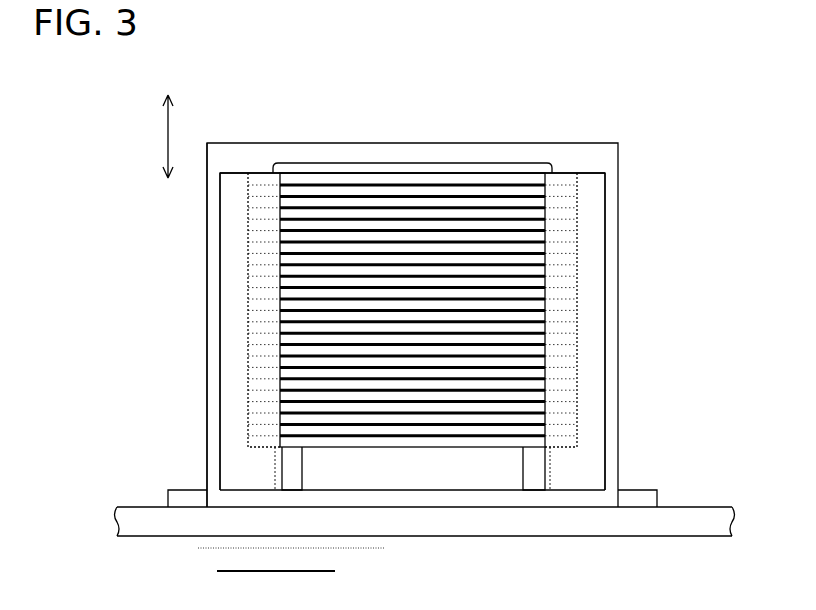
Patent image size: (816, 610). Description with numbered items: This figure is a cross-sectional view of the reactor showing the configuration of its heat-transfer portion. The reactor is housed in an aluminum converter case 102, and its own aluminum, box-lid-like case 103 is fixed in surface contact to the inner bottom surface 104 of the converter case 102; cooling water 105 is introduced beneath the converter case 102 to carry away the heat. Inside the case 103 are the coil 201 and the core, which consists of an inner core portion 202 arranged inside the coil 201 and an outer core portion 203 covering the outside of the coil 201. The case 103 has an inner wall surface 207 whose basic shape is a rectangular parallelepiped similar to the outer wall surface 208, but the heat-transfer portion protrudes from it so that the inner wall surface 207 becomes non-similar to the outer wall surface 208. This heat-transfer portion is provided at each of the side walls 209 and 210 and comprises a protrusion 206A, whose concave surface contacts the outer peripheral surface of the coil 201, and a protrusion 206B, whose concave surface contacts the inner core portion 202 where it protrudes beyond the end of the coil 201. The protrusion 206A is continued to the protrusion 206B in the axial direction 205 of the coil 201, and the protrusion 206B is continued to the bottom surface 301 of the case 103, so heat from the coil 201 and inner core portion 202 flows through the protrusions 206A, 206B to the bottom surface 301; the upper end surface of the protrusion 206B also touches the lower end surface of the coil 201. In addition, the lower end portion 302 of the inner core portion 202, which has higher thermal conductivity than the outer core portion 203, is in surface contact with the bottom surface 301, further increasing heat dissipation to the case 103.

The converter case 102 is at (135, 510).
The case 103 is at (626, 293).
The inner bottom surface 104 is at (690, 505).
The cooling water 105 is at (518, 587).
The coil 201 is at (522, 180).
The inner core portion 202 is at (408, 163).
The outer core portion 203 is at (507, 152).
The axial direction 205 is at (168, 135).
The protrusion 206A is at (245, 308).
The protrusion 206B is at (265, 472).
The inner wall surface 207 is at (221, 156).
The outer wall surface 208 is at (207, 218).
The side wall 209 is at (212, 355).
The side wall 210 is at (612, 362).
The bottom surface 301 is at (568, 495).
The lower end portion 302 is at (510, 478).